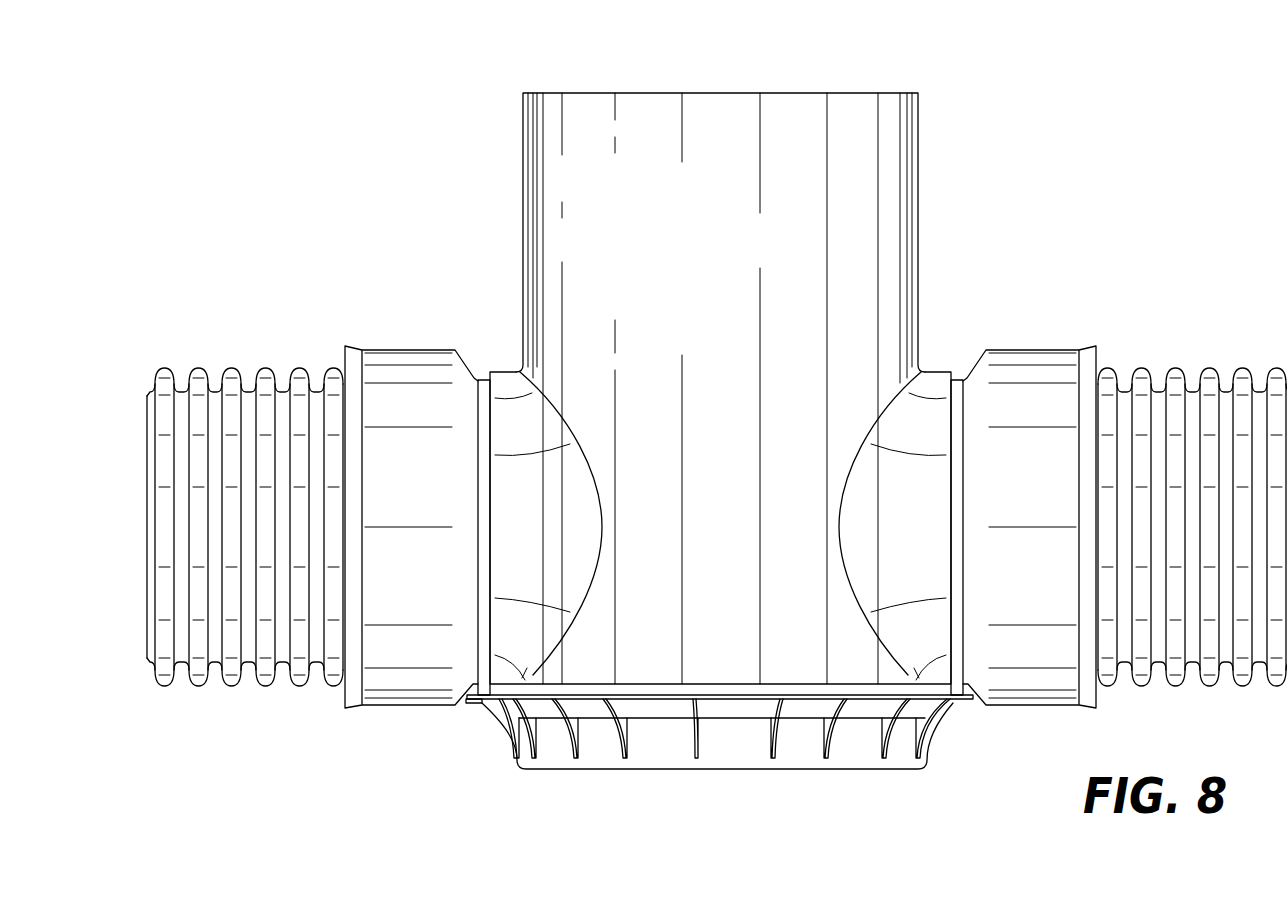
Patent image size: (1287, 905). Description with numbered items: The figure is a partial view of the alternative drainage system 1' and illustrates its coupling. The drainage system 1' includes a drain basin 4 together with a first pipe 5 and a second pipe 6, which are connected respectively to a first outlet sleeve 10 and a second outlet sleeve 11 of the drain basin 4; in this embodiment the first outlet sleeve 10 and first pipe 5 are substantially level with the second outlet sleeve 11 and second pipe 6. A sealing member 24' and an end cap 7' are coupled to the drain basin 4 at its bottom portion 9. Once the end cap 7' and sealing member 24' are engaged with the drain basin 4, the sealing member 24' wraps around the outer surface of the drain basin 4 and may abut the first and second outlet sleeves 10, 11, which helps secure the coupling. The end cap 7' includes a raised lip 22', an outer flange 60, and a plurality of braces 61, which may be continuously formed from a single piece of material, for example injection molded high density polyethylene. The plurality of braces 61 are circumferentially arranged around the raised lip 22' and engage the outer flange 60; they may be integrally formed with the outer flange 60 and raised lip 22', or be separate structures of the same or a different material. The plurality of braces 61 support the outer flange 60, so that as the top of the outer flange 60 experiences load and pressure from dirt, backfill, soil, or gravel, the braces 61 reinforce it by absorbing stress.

The drainage system 1' is at (717, 443).
The drain basin 4 is at (963, 233).
The first pipe 5 is at (200, 375).
The second pipe 6 is at (1243, 368).
The bottom portion 9 is at (713, 537).
The first outlet sleeve 10 is at (399, 700).
The second outlet sleeve 11 is at (1040, 700).
The end cap 7' is at (711, 730).
The sealing member 24' is at (720, 657).
The outer flange 60 is at (477, 702).
The raised lip 22' is at (717, 763).
The plurality of braces 61 is at (830, 723).